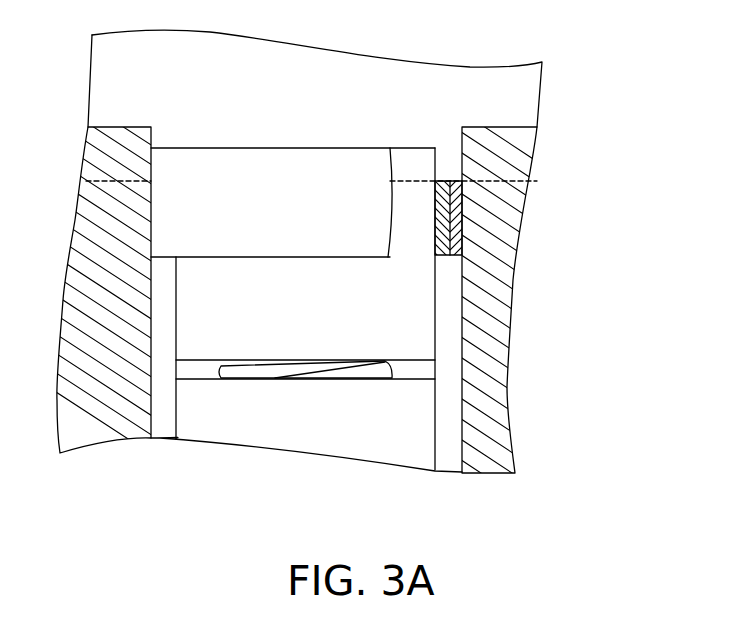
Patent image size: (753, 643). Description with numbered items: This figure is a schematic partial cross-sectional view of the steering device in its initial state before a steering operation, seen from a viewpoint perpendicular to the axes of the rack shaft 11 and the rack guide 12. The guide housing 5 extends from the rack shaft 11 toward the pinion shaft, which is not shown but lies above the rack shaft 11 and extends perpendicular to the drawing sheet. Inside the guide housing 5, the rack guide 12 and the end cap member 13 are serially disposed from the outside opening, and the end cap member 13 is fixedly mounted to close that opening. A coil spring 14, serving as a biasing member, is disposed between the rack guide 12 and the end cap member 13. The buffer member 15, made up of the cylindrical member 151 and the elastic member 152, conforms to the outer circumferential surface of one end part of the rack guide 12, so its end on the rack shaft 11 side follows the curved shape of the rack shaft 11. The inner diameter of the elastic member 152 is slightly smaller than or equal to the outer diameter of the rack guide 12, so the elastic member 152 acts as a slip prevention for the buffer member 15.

The guide housing 5 is at (507, 417).
The rack shaft 11 is at (525, 93).
The rack guide 12 is at (420, 311).
The end cap member 13 is at (360, 413).
The coil spring 14 is at (235, 373).
The buffer member 15 is at (637, 217).
The cylindrical member 151 is at (468, 210).
The elastic member 152 is at (450, 240).